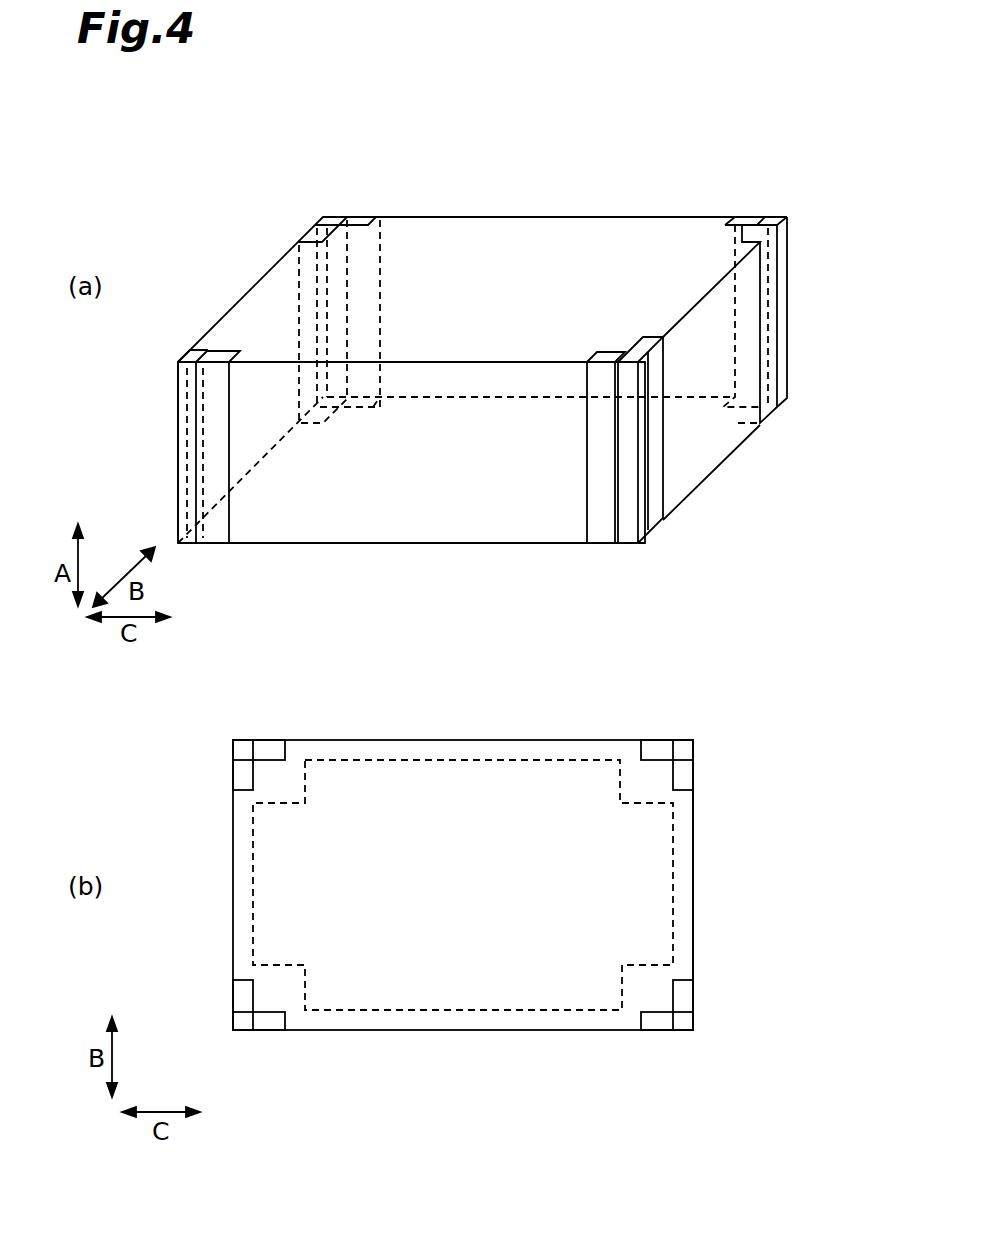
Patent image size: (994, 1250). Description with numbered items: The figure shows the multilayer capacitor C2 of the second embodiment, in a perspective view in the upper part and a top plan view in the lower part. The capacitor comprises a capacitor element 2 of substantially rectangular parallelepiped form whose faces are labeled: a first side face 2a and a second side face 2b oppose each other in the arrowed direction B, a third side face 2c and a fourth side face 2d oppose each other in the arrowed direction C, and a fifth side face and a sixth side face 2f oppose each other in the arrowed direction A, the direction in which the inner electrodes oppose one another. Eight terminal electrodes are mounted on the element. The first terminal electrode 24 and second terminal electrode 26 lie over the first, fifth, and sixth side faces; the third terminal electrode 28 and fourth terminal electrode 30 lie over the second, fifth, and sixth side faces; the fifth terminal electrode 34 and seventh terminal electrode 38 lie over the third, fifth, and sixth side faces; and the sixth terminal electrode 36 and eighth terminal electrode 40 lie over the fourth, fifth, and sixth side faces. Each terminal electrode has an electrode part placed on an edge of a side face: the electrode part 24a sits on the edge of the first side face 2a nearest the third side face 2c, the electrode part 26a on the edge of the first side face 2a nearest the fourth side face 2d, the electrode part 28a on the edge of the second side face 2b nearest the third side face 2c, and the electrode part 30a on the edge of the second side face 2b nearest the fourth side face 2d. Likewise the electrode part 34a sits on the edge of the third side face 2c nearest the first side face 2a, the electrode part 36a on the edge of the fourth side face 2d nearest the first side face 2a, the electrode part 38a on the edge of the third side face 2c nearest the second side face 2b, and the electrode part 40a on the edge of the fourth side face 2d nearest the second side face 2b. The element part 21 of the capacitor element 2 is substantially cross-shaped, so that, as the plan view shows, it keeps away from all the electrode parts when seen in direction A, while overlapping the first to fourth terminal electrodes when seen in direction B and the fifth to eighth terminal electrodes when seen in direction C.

The multilayer capacitor C2 is at (682, 123).
The capacitor element 2 is at (466, 240).
The first side face 2a is at (478, 515).
The second side face 2b is at (667, 255).
The third side face 2c is at (260, 327).
The fourth side face 2d is at (721, 423).
The sixth side face 2f is at (402, 512).
The element part 21 is at (463, 920).
The first terminal electrode 24 is at (278, 1022).
The electrode part 24a is at (217, 473).
The second terminal electrode 26 is at (658, 1022).
The electrode part 26a is at (600, 505).
The third terminal electrode 28 is at (270, 752).
The electrode part 28a is at (372, 262).
The fourth terminal electrode 30 is at (655, 752).
The electrode part 30a is at (752, 290).
The fifth terminal electrode 34 is at (242, 992).
The electrode part 34a is at (188, 440).
The sixth terminal electrode 36 is at (688, 997).
The electrode part 36a is at (655, 463).
The seventh terminal electrode 38 is at (242, 775).
The electrode part 38a is at (306, 288).
The eighth terminal electrode 40 is at (688, 775).
The electrode part 40a is at (780, 300).